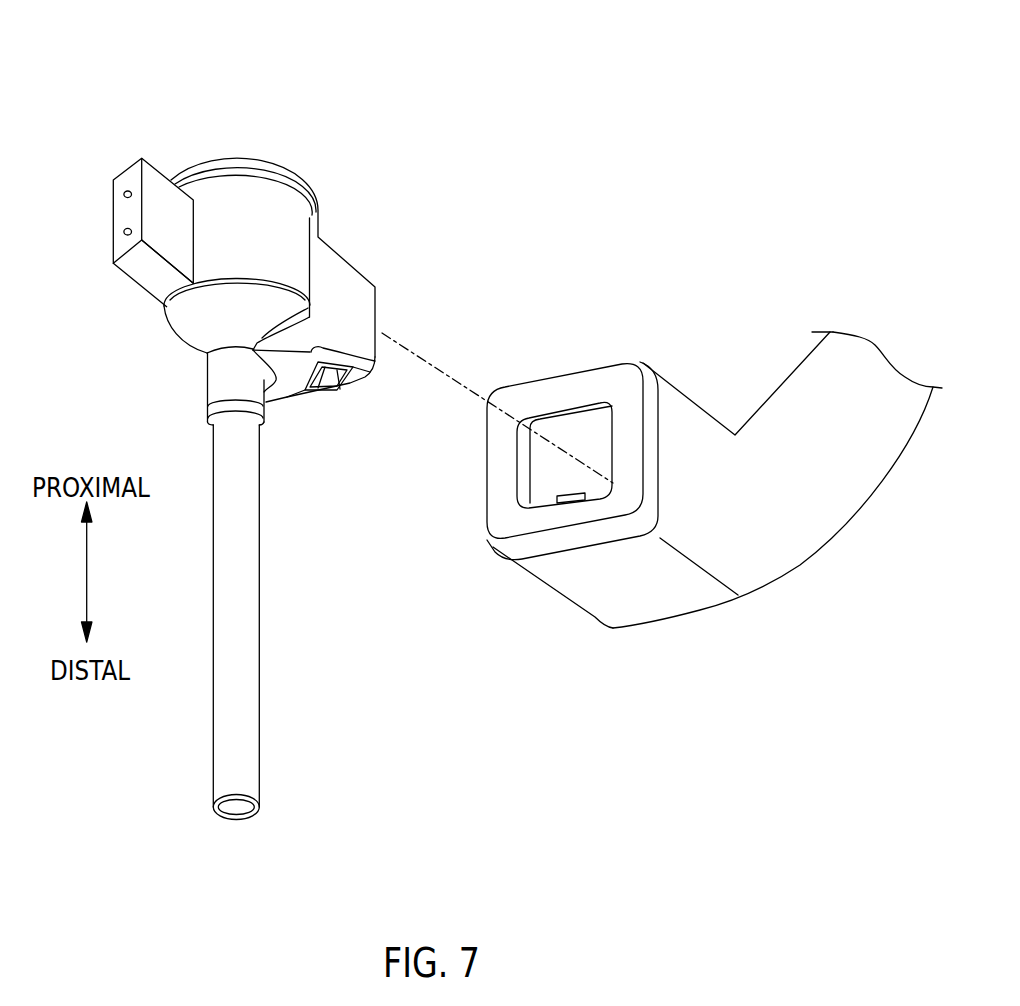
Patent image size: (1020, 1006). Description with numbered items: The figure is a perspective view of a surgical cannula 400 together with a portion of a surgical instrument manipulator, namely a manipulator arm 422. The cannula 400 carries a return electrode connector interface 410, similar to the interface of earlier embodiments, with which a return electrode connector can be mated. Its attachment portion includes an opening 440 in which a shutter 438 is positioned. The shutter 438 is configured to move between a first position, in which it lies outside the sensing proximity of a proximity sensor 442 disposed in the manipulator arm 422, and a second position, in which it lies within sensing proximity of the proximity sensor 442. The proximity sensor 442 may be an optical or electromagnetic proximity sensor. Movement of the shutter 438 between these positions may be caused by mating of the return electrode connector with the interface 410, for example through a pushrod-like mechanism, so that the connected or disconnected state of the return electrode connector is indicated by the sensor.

The surgical cannula 400 is at (188, 112).
The return electrode connector interface 410 is at (122, 247).
The manipulator arm 422 is at (817, 537).
The shutter 438 is at (320, 383).
The opening 440 is at (343, 390).
The proximity sensor 442 is at (567, 503).